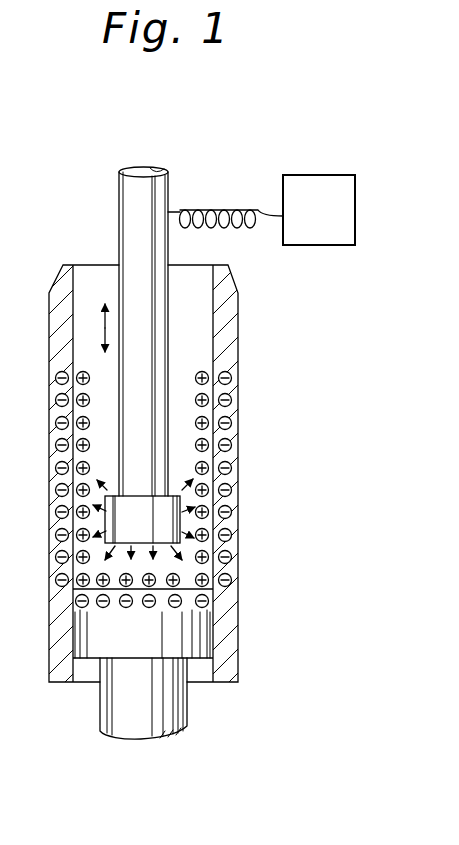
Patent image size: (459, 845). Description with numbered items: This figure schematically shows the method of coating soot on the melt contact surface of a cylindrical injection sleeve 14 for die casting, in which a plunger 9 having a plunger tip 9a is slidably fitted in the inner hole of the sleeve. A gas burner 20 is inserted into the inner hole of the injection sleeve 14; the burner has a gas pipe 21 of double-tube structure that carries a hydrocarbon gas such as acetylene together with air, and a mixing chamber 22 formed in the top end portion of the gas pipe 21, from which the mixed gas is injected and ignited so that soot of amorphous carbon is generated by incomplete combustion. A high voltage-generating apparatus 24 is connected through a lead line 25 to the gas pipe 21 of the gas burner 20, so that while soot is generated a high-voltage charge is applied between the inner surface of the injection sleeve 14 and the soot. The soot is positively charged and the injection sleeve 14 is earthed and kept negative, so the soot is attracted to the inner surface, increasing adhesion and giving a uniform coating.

The plunger 9 is at (97, 704).
The plunger tip 9a is at (207, 632).
The injection sleeve 14 is at (238, 421).
The gas burner 20 is at (178, 314).
The gas pipe 21 is at (168, 348).
The mixing chamber 22 is at (183, 515).
The high voltage-generating apparatus 24 is at (322, 177).
The lead line 25 is at (226, 207).